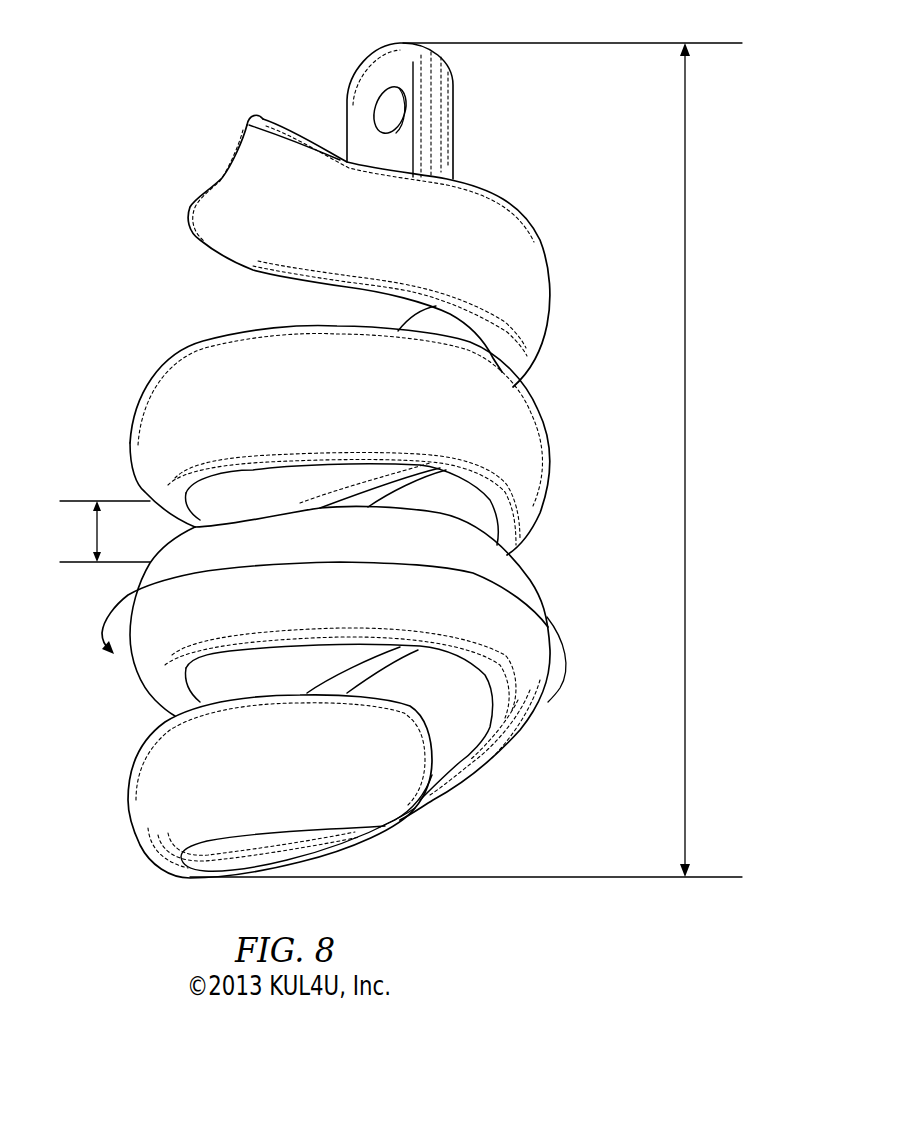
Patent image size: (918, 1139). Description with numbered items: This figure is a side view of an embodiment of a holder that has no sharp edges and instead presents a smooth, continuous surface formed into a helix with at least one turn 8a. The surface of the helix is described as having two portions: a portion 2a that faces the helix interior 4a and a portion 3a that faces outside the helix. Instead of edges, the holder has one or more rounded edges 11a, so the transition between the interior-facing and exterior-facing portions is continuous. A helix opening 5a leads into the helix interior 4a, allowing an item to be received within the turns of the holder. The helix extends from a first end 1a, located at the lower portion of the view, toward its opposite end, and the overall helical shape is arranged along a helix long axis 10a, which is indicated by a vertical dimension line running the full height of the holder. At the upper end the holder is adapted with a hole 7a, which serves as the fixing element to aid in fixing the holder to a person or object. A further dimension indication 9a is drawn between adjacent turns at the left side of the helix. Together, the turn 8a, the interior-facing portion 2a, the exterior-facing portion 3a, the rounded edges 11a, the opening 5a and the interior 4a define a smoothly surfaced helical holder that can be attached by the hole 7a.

The first end 1a is at (375, 840).
The portion facing the helix interior 2a is at (449, 713).
The portion facing outside the helix 3a is at (122, 798).
The helix interior 4a is at (229, 672).
The helix opening 5a is at (217, 852).
The hole 7a is at (393, 110).
The turn 8a is at (545, 620).
The loop spacing 9a is at (93, 524).
The helix long axis 10a is at (687, 125).
The rounded edge 11a is at (522, 514).